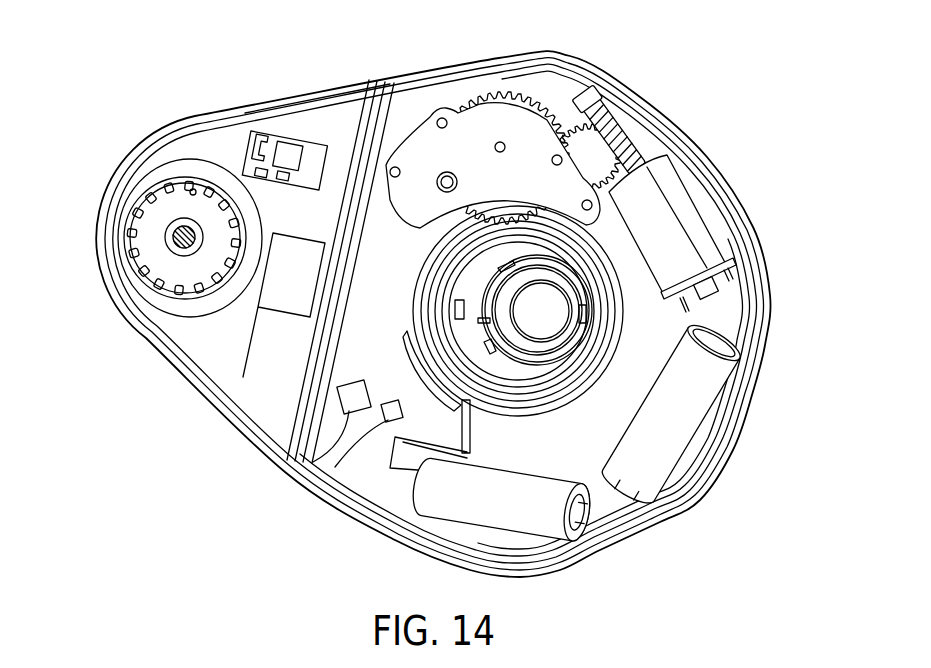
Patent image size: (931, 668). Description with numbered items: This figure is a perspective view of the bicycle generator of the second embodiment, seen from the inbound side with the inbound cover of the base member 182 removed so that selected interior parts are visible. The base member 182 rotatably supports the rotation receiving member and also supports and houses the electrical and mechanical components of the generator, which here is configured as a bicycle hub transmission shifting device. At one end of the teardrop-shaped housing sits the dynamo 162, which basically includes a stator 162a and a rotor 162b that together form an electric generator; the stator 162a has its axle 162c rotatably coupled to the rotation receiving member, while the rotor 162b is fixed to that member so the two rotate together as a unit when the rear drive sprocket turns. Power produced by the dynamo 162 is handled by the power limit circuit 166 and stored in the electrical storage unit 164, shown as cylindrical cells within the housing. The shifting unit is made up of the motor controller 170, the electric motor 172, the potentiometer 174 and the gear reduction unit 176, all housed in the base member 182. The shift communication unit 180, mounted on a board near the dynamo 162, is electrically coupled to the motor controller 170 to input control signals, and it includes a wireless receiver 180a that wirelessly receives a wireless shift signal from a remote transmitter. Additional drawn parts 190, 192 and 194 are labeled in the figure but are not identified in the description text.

The dynamo 162 is at (143, 217).
The stator 162a is at (160, 221).
The rotor 162b is at (123, 253).
The axle 162c is at (177, 252).
The electrical storage unit 164 is at (467, 502).
The power limit circuit 166 is at (348, 460).
The motor controller 170 is at (300, 456).
The electric motor 172 is at (688, 208).
The potentiometer 174 is at (402, 372).
The gear reduction unit 176 is at (534, 97).
The shift communication unit 180 is at (284, 148).
The wireless receiver 180a is at (250, 140).
The base member 182 is at (728, 465).
The lens assembly 190 is at (512, 301).
The sensor 192 is at (378, 470).
The circuit board mount 194 is at (314, 137).